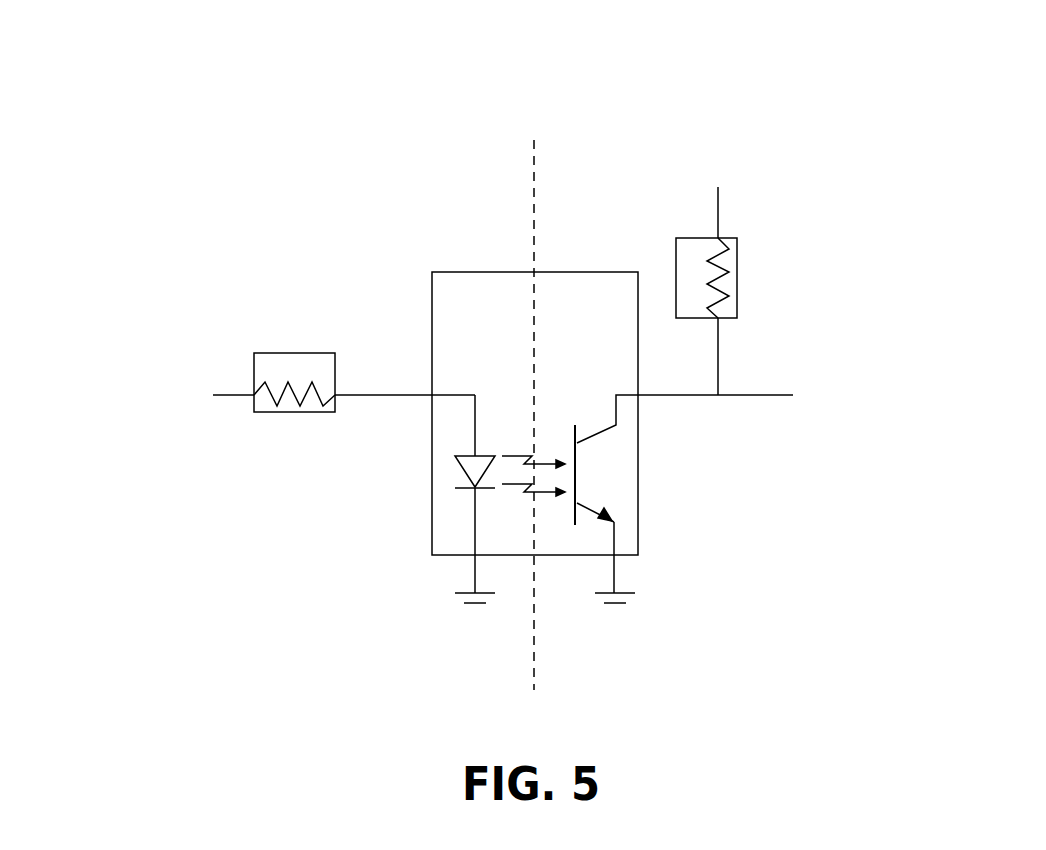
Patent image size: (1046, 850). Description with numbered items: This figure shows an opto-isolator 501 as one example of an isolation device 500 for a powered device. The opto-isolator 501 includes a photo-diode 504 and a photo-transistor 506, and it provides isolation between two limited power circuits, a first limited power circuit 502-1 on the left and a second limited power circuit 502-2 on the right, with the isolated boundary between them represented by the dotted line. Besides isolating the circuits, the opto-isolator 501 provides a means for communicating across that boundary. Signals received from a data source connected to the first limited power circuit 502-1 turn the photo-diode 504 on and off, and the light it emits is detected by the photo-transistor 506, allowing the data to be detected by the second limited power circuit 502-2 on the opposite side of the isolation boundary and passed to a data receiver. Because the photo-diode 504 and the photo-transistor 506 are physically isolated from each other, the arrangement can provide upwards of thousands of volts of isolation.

The isolation device 500 is at (549, 94).
The opto-isolator 501 is at (548, 272).
The Limited Power Circuit 1 502-1 is at (418, 128).
The Limited Power Circuit 2 502-2 is at (662, 128).
The photo-diode 504 is at (457, 460).
The photo-transistor 506 is at (577, 488).